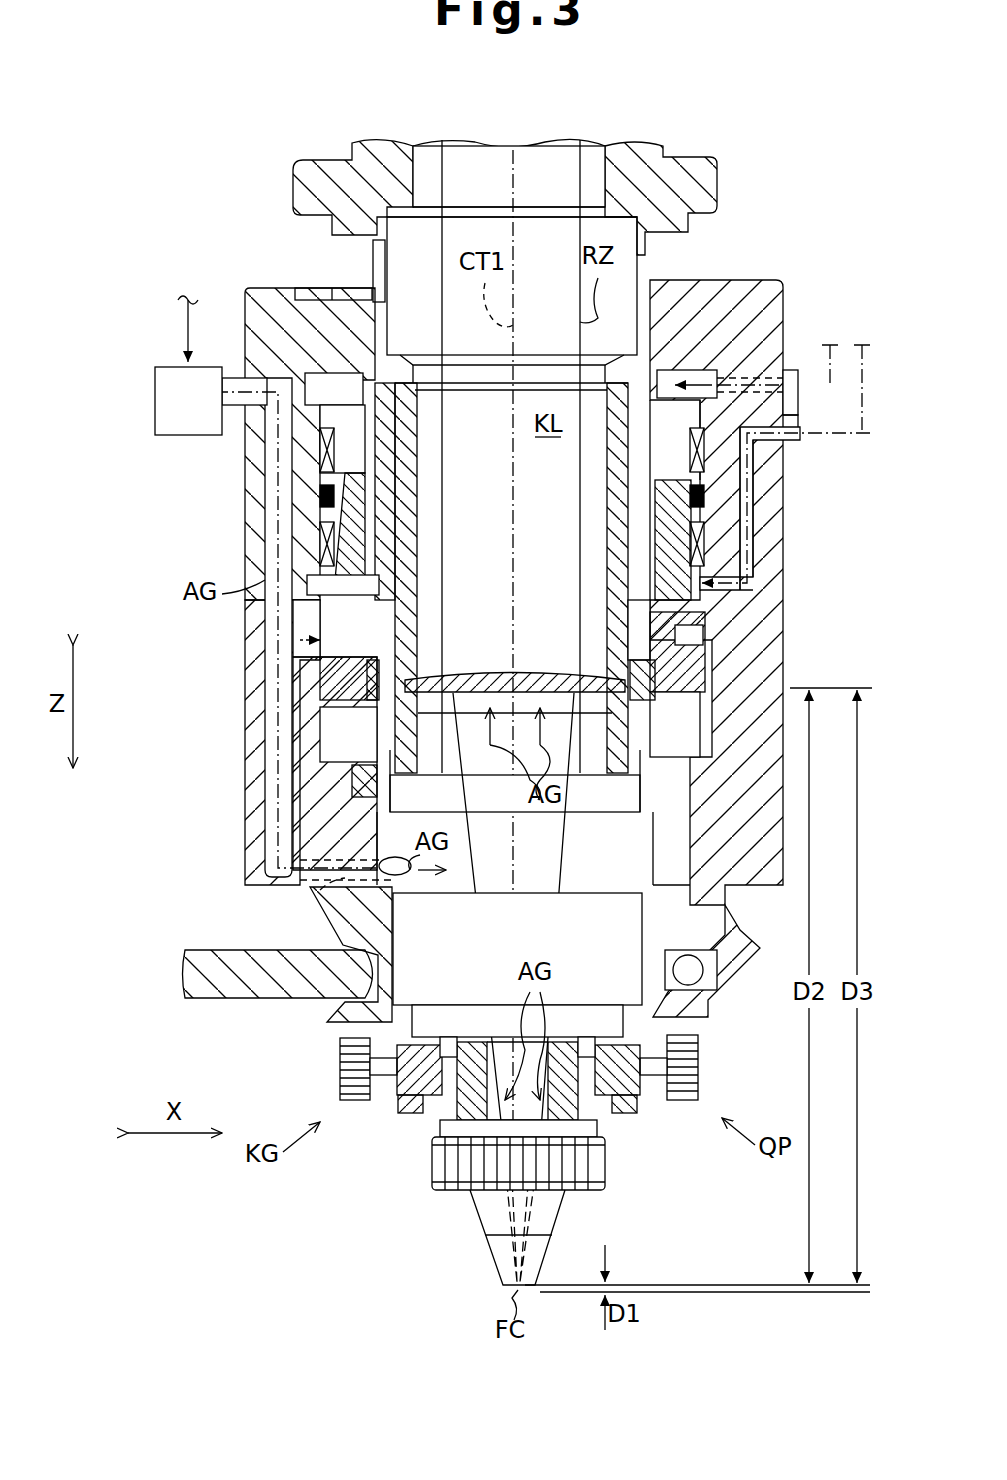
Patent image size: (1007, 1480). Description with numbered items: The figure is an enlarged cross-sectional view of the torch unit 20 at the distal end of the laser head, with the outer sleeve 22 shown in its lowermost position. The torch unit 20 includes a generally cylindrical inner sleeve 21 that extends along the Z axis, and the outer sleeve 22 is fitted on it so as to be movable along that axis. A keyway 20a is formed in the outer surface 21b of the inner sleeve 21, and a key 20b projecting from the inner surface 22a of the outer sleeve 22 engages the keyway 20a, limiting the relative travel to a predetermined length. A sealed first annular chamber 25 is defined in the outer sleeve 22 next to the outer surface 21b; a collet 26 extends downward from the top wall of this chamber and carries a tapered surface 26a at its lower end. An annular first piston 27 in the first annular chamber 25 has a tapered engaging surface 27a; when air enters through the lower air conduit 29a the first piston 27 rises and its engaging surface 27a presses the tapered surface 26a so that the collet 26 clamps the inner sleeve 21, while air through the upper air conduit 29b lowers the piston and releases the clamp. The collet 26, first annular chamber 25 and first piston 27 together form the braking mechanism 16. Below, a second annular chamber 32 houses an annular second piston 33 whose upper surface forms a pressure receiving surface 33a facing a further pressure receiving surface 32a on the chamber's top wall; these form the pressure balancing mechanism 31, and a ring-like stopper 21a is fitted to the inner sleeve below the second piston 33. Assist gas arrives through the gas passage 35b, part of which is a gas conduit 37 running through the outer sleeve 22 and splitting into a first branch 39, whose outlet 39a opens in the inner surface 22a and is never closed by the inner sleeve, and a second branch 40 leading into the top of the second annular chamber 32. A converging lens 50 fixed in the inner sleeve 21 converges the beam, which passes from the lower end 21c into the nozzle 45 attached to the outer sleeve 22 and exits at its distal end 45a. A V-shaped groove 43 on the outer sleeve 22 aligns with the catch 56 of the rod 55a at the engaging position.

The inner sleeve 21 is at (735, 180).
The torch unit 20 is at (220, 488).
The keyway 20a is at (372, 250).
The key 20b is at (375, 288).
The outer sleeve 22 is at (787, 582).
The inner surface 22a is at (372, 620).
The first annular chamber 25 is at (316, 386).
The collet 26 is at (705, 370).
The tapered surface 26a is at (700, 530).
The first piston 27 is at (345, 540).
The tapered engaging surface 27a is at (413, 500).
The lower air conduit 29a is at (800, 432).
The upper air conduit 29b is at (766, 370).
The pressure balancing mechanism 31 is at (722, 640).
The second annular chamber 32 is at (396, 597).
The pressure receiving surface 32a is at (712, 650).
The second piston 33 is at (740, 688).
The pressure receiving surface 33a is at (655, 626).
The gas passage 35b is at (178, 332).
The gas conduit 37 is at (278, 718).
The first branch 39 is at (335, 895).
The outlet 39a is at (403, 880).
The second branch 40 is at (322, 652).
The braking mechanism 16 is at (320, 470).
The stopper 21a is at (355, 748).
The outer surface 21b is at (700, 556).
The lower end 21c is at (598, 818).
The groove 43 is at (722, 930).
The nozzle 45 is at (607, 1165).
The distal end 45a is at (505, 1284).
The converging lens 50 is at (528, 675).
The rod 55a is at (228, 1000).
The catch 56 is at (717, 968).